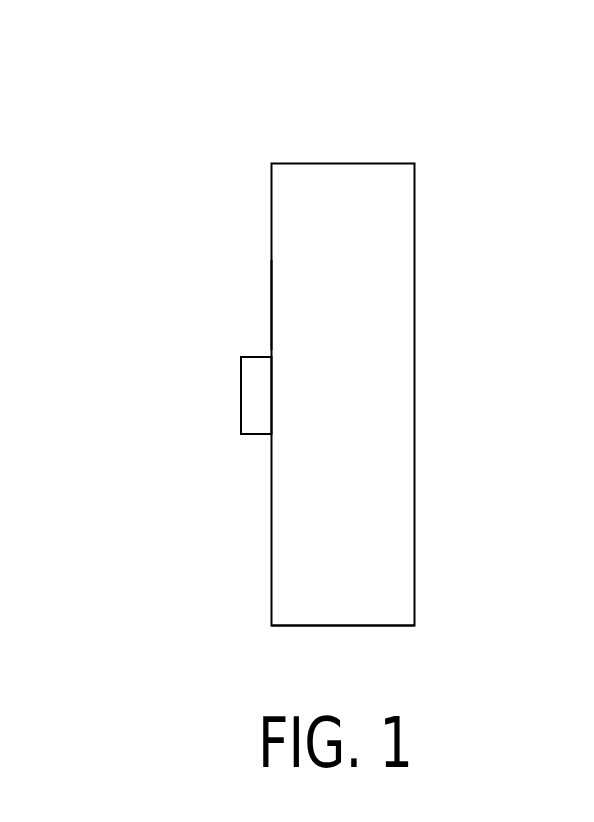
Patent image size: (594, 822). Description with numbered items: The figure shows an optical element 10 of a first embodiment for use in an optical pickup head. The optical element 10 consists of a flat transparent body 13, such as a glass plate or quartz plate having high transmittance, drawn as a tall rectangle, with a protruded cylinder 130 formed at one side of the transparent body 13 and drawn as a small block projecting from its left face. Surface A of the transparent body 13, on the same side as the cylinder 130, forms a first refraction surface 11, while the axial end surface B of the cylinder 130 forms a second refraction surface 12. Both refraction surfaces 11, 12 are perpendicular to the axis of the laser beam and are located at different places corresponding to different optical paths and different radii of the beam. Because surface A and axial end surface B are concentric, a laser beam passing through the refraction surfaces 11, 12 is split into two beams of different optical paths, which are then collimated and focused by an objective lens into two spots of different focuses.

The optical element 10 is at (437, 247).
The first refraction surface 11 is at (271, 250).
The second refraction surface 12 is at (241, 375).
The flat transparent body 13 is at (358, 605).
The protruded cylinder 130 is at (255, 367).
The surface of the transparent body A is at (271, 309).
The axial end surface of the cylinder B is at (241, 410).